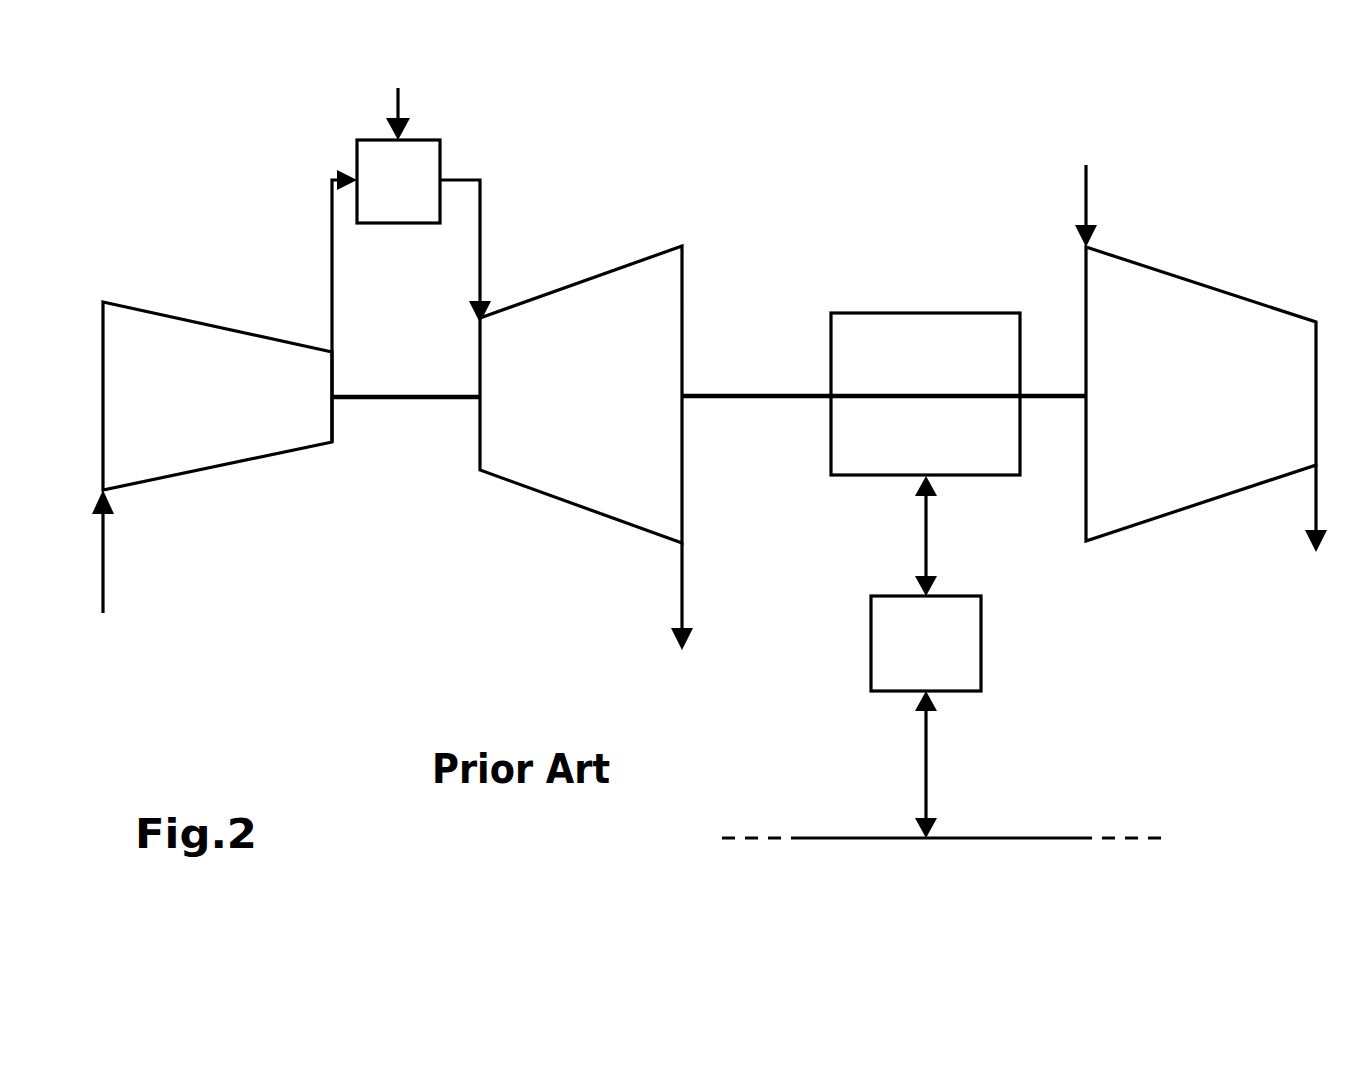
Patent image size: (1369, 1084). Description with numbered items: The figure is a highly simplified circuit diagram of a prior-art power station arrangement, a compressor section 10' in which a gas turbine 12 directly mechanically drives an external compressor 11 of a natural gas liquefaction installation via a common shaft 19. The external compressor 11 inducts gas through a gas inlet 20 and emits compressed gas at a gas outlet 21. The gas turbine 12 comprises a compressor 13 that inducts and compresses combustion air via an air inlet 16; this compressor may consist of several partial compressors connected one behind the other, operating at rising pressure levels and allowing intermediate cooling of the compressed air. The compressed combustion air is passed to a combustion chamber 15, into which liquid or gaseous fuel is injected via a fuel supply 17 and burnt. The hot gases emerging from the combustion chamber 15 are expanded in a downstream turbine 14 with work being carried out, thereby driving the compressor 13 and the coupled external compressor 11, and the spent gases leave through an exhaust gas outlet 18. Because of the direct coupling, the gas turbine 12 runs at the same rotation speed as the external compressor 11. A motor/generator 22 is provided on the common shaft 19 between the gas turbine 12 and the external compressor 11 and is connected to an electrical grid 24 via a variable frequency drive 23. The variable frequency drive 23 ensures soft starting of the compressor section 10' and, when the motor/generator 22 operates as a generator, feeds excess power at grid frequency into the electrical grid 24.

The compressor section 10' is at (1220, 747).
The compressor (external) 11 is at (1219, 425).
The gas turbine 12 is at (424, 550).
The compressor 13 is at (222, 416).
The turbine 14 is at (613, 414).
The combustion chamber 15 is at (372, 167).
The air inlet 16 is at (105, 560).
The fuel supply 17 is at (399, 100).
The exhaust gas outlet 18 is at (683, 596).
The shaft 19 is at (710, 391).
The gas inlet 20 is at (1087, 203).
The gas outlet 21 is at (1313, 502).
The motor/generator 22 is at (938, 342).
The variable frequency drive 23 is at (898, 650).
The electrical grid 24 is at (980, 838).